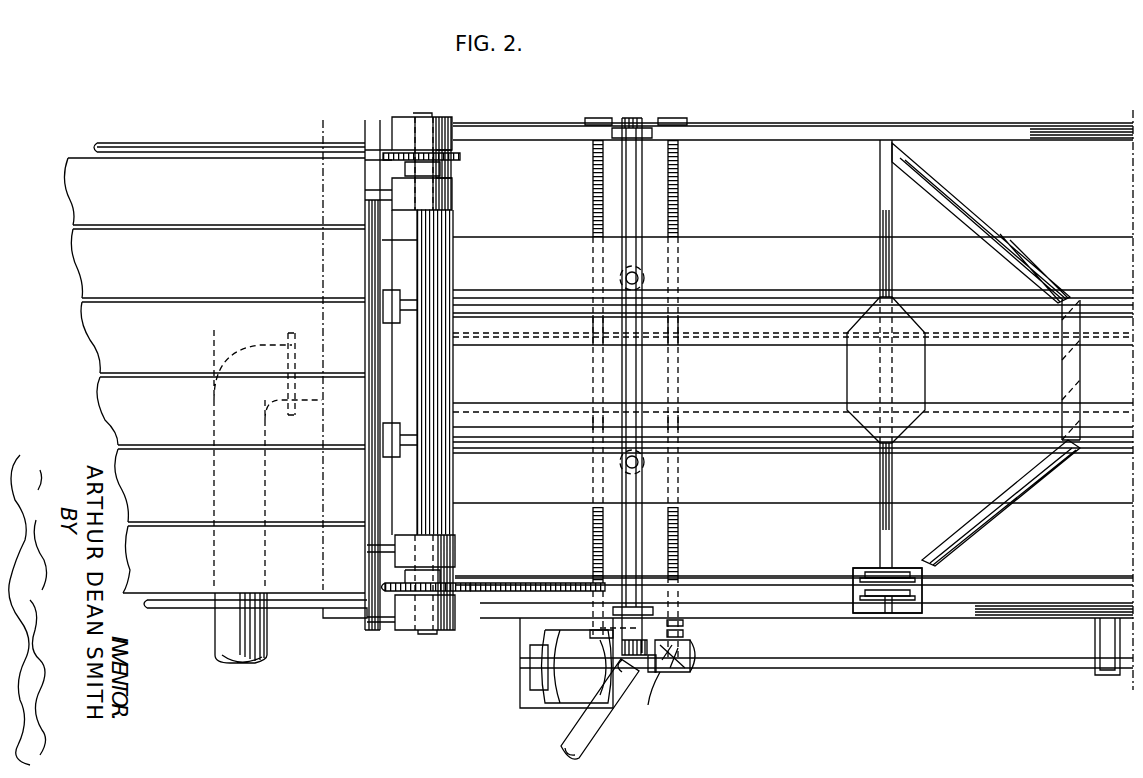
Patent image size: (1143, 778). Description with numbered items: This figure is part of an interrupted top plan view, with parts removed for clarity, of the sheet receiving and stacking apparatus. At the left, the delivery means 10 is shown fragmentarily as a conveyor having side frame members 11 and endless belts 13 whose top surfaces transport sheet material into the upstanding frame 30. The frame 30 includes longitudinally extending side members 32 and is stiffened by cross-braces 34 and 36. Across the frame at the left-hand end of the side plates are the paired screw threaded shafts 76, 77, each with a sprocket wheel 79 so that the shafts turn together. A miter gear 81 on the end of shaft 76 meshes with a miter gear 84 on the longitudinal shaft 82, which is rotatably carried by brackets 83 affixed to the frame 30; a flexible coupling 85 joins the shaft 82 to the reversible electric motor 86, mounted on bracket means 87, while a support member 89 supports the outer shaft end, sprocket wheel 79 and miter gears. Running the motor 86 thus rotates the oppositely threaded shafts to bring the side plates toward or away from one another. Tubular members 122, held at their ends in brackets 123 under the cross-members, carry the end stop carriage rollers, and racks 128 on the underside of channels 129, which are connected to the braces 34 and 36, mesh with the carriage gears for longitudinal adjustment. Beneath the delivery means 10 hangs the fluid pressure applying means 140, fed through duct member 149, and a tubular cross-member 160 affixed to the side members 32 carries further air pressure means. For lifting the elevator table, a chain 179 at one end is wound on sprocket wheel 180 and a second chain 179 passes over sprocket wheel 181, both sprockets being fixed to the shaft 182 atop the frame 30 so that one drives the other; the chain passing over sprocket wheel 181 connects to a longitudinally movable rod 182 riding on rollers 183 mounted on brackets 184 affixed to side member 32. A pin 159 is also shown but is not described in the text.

The delivery means 10 is at (185, 140).
The side frame members 11 is at (257, 143).
The endless belts 13 is at (75, 242).
The upstanding frame 30 is at (1003, 123).
The side members 32 is at (866, 123).
The cross-brace 34 is at (893, 222).
The cross-brace 36 is at (965, 208).
The screw threaded shaft 76 is at (679, 203).
The screw threaded shaft 77 is at (593, 203).
The sprocket wheel 79 is at (600, 630).
The miter gear 81 is at (690, 653).
The shaft 82 is at (933, 660).
The brackets 83 is at (1105, 677).
The miter gear 84 is at (665, 672).
The flexible coupling 85 is at (632, 672).
The electric motor 86 is at (535, 658).
The bracket means 87 is at (530, 708).
The support member 89 is at (660, 675).
The tubular members 122 is at (812, 295).
The brackets 123 is at (389, 323).
The racks 128 is at (1022, 403).
The channels 129 is at (950, 403).
The fluid pressure applying means 140 is at (326, 612).
The duct member 149 is at (215, 637).
The pivot pin 159 is at (645, 278).
The tubular cross-member 160 is at (628, 123).
The chain 179 is at (542, 583).
The sprocket wheel 180 is at (455, 162).
The sprocket wheel 181 is at (456, 584).
The shaft 182 is at (440, 223).
The rollers 183 is at (908, 566).
The brackets 184 is at (893, 613).